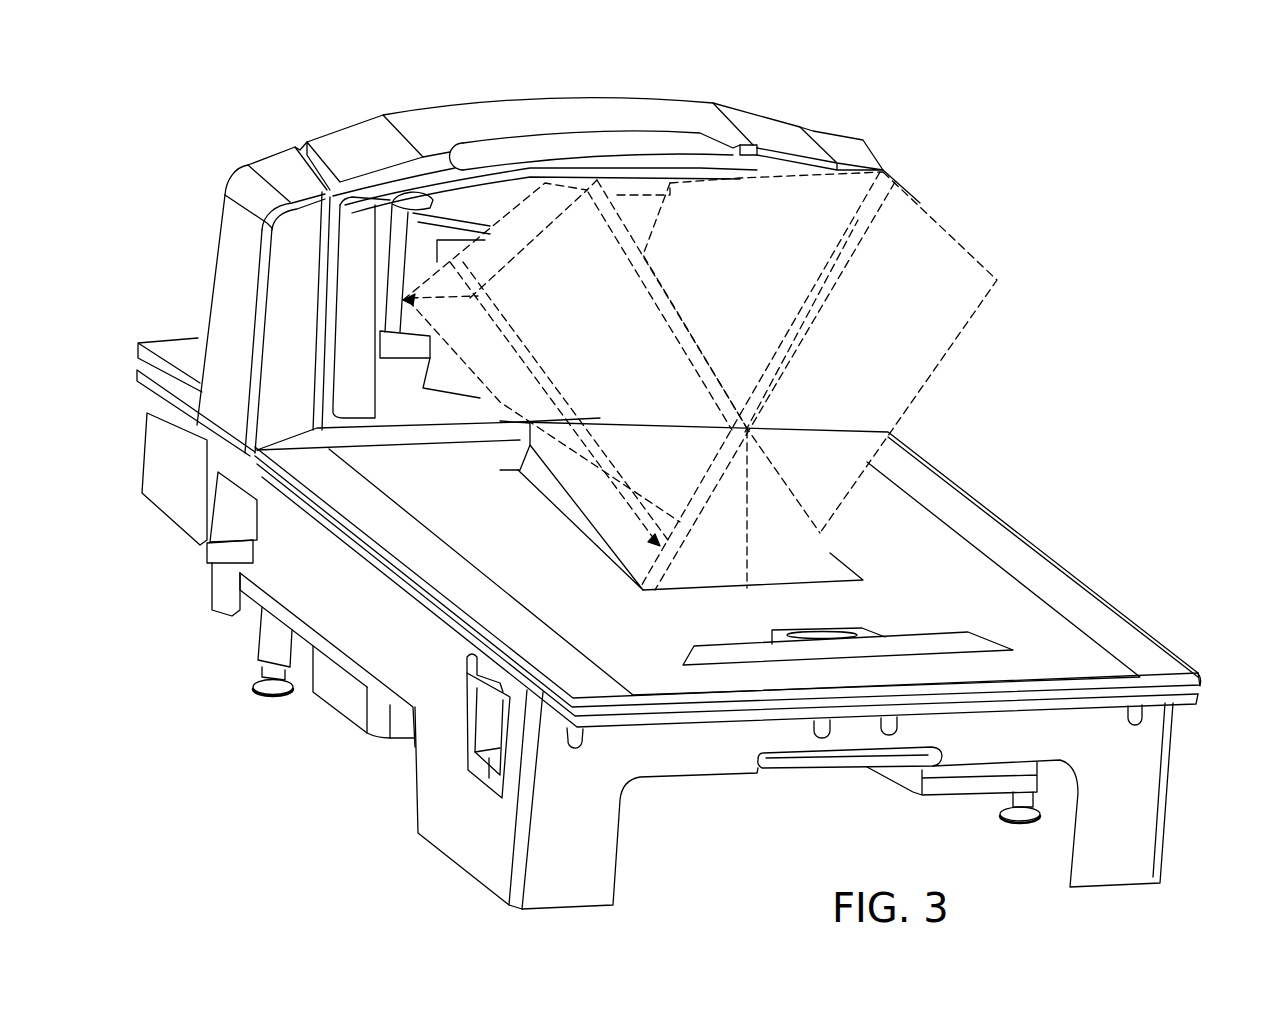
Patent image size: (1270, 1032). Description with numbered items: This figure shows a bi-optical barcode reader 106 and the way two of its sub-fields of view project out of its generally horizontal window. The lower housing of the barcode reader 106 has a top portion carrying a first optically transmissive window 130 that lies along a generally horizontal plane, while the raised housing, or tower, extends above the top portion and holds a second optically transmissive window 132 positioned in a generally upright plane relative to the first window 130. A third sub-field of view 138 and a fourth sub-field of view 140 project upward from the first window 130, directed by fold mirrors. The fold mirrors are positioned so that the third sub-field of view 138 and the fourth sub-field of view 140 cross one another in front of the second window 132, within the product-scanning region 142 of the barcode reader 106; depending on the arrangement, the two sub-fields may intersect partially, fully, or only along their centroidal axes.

The barcode reader 106 is at (310, 70).
The first optically transmissive window 130 is at (863, 579).
The second optically transmissive window 132 is at (420, 245).
The third sub-field of view 138 is at (532, 413).
The fourth sub-field of view 140 is at (922, 230).
The product-scanning region 142 is at (935, 466).